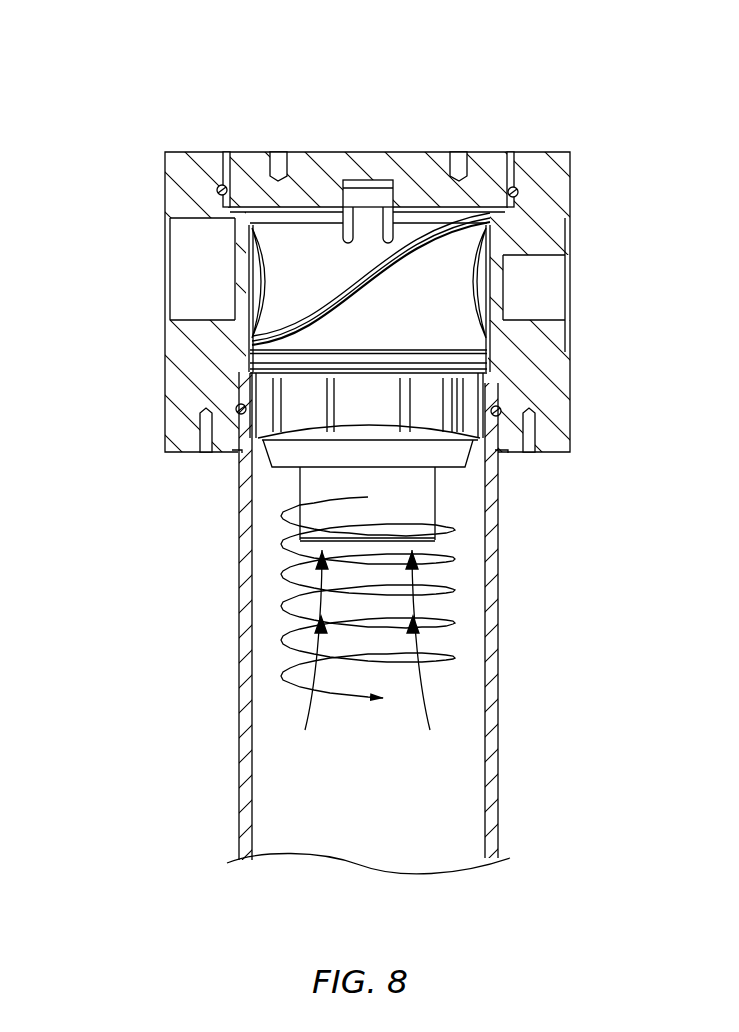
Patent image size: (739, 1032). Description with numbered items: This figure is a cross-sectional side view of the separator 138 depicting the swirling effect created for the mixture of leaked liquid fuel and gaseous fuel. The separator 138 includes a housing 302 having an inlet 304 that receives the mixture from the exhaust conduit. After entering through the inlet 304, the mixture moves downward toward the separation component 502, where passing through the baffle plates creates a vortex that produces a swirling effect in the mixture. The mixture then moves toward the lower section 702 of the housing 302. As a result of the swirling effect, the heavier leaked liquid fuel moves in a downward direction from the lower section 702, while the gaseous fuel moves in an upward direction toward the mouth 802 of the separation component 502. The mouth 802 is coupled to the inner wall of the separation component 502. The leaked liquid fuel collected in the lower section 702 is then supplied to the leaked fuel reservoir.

The separator 138 is at (369, 449).
The housing 302 is at (586, 167).
The inlet 304 is at (138, 287).
The separation component 502 is at (302, 398).
The lower section 702 is at (515, 658).
The mouth 802 is at (312, 484).